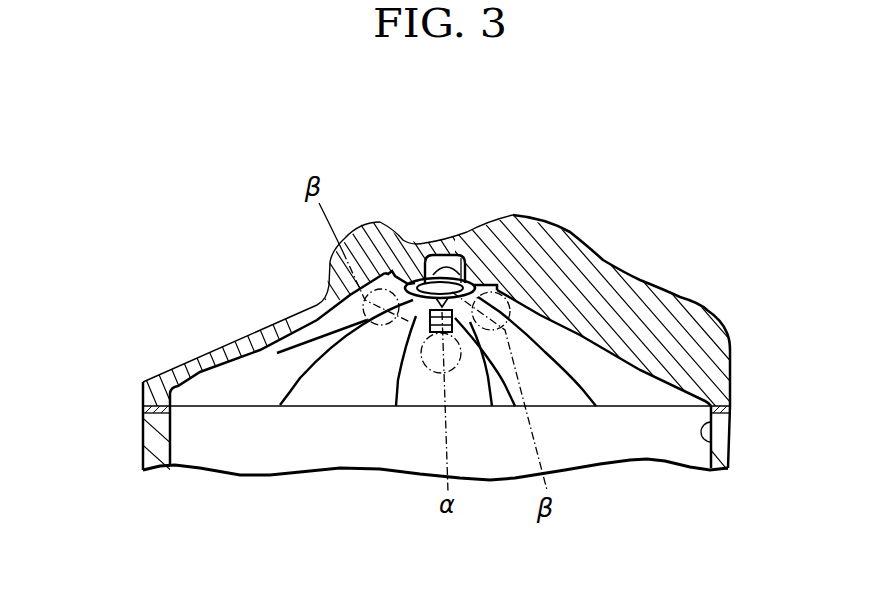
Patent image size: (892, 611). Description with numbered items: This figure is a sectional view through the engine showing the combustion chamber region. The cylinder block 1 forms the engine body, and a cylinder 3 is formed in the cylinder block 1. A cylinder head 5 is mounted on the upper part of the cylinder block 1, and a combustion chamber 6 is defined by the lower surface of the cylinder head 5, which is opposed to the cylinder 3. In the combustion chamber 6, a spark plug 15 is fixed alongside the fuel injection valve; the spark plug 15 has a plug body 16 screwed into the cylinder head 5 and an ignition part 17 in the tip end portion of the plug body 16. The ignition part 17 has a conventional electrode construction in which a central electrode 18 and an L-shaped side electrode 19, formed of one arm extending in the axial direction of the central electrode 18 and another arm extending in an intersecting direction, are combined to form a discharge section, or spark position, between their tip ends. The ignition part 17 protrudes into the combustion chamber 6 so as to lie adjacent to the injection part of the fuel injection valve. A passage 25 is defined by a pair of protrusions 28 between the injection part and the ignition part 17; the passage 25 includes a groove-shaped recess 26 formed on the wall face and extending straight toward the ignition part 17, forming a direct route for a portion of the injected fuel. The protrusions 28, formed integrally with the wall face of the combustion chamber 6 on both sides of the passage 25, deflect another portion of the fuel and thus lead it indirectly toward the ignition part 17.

The cylinder block 1 is at (158, 436).
The cylinder 3 is at (731, 430).
The cylinder head 5 is at (258, 326).
The combustion chamber 6 is at (615, 383).
The spark plug 15 is at (437, 262).
The plug body 16 is at (452, 208).
The ignition part 17 is at (408, 372).
The central electrode 18 is at (433, 258).
The side electrode 19 is at (480, 365).
The passage 25 is at (462, 263).
The groove-shaped recess 26 is at (432, 265).
The protrusions 28 is at (410, 282).